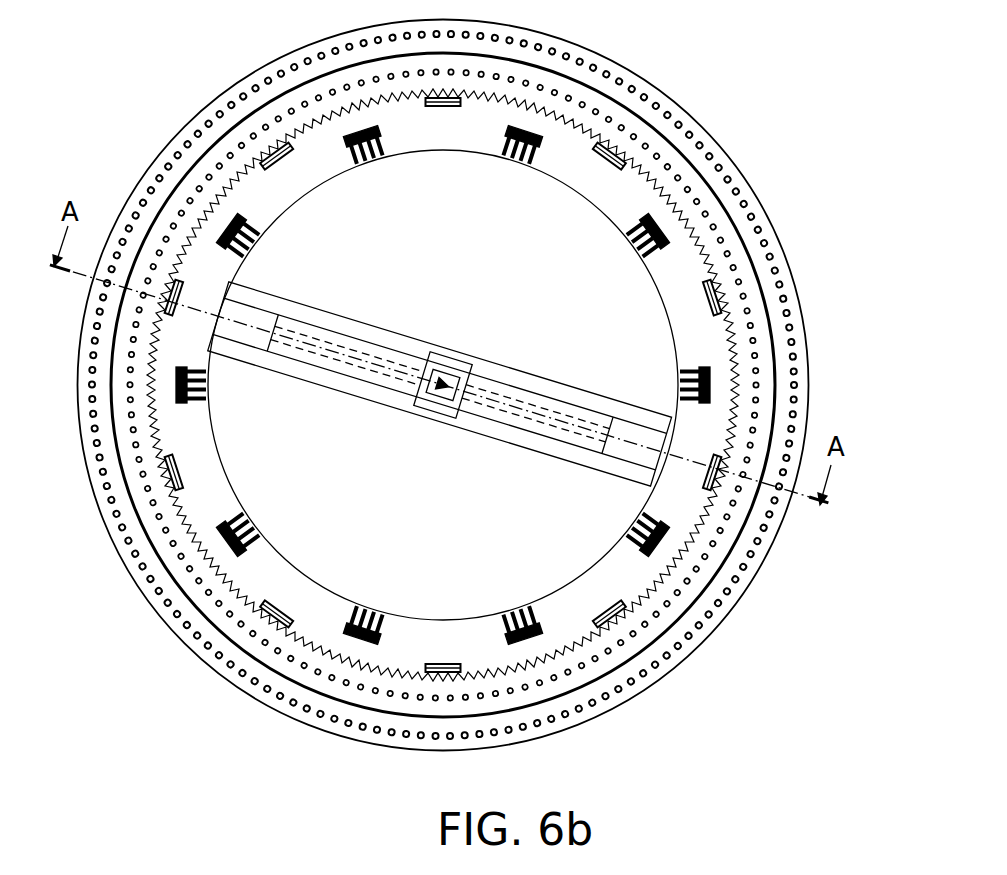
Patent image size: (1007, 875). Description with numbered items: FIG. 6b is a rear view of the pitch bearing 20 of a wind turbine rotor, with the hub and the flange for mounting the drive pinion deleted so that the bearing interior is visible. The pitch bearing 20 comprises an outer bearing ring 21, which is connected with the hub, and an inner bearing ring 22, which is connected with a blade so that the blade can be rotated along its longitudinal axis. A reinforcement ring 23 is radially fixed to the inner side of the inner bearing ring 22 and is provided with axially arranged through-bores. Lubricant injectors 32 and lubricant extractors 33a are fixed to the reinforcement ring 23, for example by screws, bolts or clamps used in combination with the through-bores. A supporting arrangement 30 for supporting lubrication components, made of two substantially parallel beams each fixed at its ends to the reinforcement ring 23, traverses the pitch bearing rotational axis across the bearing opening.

The pitch bearing 20 is at (768, 129).
The outer bearing ring 21 is at (287, 84).
The inner bearing ring 22 is at (200, 180).
The reinforcement ring 23 is at (577, 160).
The supporting arrangement 30 is at (498, 462).
The lubricant injectors 32 is at (232, 545).
The lubricant extractors 33a is at (265, 620).